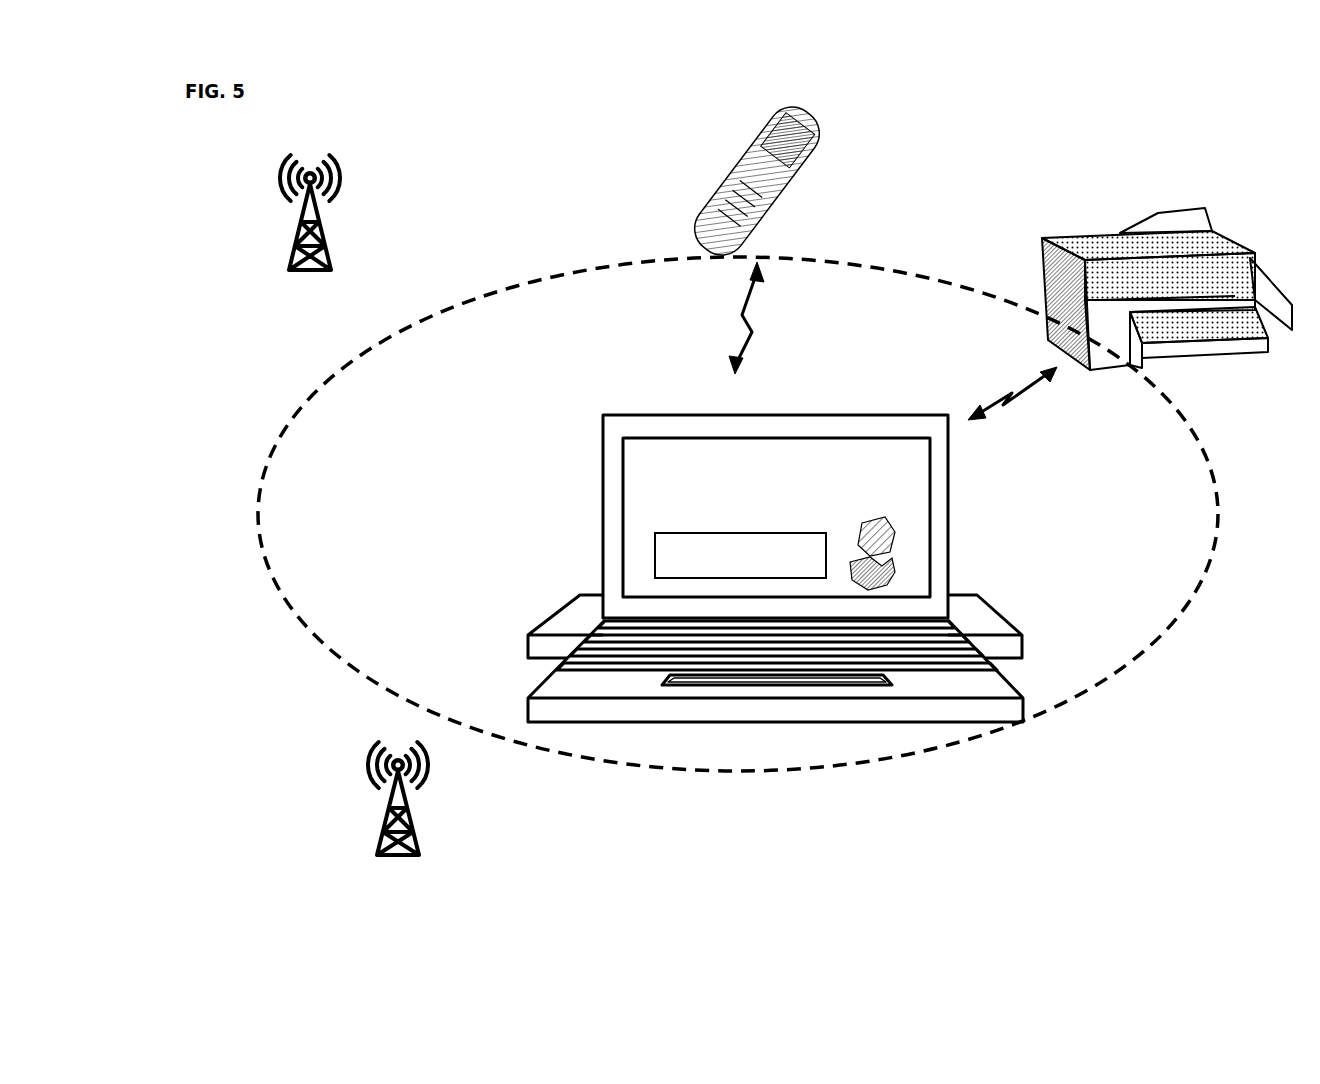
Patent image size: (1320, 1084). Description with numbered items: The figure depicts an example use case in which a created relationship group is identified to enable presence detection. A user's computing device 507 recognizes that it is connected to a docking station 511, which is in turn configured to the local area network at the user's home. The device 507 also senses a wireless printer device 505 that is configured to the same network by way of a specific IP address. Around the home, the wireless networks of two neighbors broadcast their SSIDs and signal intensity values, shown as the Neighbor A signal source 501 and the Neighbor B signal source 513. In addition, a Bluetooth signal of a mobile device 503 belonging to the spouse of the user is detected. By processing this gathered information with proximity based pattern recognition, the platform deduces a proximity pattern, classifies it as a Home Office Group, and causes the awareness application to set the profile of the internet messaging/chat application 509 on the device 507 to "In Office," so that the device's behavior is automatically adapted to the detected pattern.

The Neighbor A signal source 501 is at (308, 243).
The mobile device 503 is at (715, 183).
The wireless printer device 505 is at (1120, 215).
The device 507 is at (603, 521).
The internet messaging/chat application 509 is at (912, 478).
The docking station 511 is at (1000, 613).
The Neighbor B signal source 513 is at (397, 824).